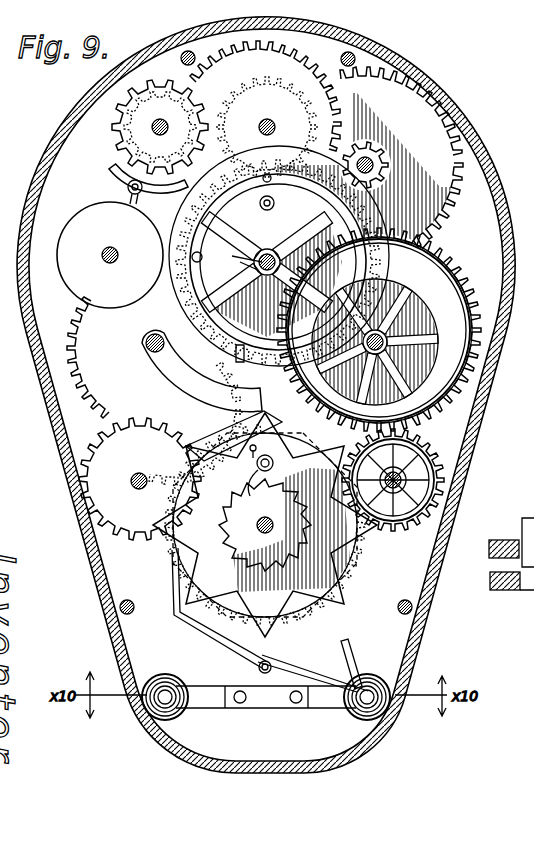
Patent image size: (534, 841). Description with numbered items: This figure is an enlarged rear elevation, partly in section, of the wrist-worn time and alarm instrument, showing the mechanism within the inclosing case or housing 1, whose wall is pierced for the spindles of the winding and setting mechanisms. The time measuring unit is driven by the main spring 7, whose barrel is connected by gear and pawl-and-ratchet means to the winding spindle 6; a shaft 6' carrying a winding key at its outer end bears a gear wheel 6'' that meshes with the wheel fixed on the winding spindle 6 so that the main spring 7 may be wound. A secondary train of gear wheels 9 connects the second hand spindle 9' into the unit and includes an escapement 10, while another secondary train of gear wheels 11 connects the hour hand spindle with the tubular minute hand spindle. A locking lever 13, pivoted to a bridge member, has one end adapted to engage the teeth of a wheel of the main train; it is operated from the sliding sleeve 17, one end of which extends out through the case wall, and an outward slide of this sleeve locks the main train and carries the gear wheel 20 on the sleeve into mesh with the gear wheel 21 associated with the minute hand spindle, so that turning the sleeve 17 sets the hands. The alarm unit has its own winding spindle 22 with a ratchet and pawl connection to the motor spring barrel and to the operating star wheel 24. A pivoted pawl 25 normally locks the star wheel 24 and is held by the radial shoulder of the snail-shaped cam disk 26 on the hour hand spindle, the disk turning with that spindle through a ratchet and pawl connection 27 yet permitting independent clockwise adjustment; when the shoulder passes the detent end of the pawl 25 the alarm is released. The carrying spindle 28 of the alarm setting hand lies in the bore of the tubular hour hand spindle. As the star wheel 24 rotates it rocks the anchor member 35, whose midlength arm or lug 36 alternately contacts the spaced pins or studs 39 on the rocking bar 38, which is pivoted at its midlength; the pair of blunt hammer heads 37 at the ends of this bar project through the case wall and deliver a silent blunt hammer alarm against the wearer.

The inclosing case or housing 1 is at (45, 187).
The winding spindle 6 is at (379, 330).
The shaft 6' is at (409, 373).
The gear wheel 6'' is at (429, 480).
The main spring 7 is at (466, 286).
The secondary train of gear wheels 9 is at (269, 78).
The second hand spindle 9' is at (267, 127).
The escapement 10 is at (116, 141).
The secondary train of gear wheels 11 is at (476, 238).
The locking lever 13 is at (130, 199).
The sliding sleeve 17 is at (131, 482).
The gear wheel 20 is at (110, 452).
The gear wheel 21 is at (108, 395).
The winding spindle of the alarm unit 22 is at (258, 522).
The star wheel 24 is at (332, 573).
The pivoted pawl 25 is at (238, 408).
The cam disk or snail 26 is at (170, 213).
The ratchet and pawl connection 27 is at (232, 256).
The carrying spindle of the alarm setting hand 28 is at (186, 323).
The rocking anchor member 35 is at (203, 640).
The arm or lug 36 is at (258, 718).
The blunt hammer heads 37 is at (163, 683).
The rocking bar 38 is at (210, 708).
The spaced pins or studs 39 is at (241, 704).